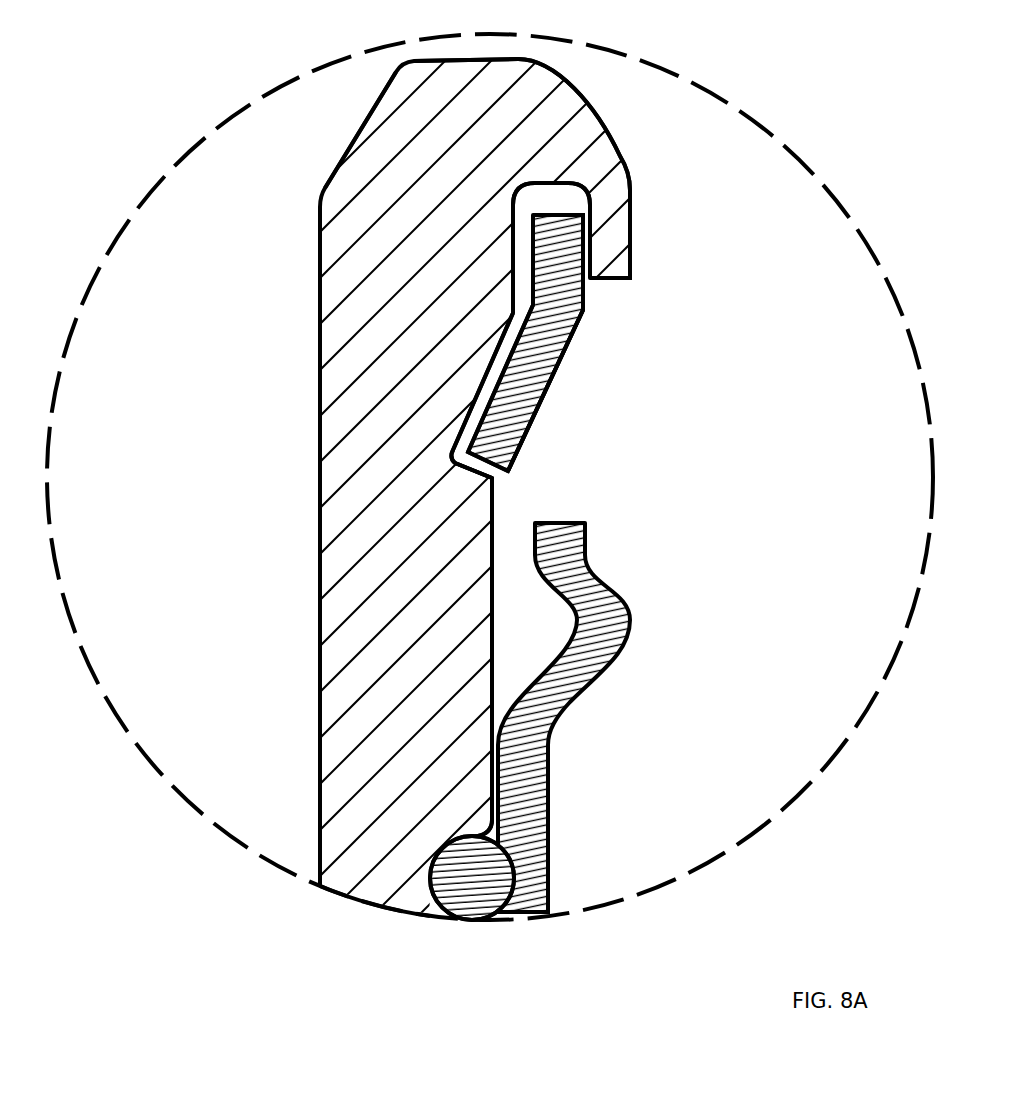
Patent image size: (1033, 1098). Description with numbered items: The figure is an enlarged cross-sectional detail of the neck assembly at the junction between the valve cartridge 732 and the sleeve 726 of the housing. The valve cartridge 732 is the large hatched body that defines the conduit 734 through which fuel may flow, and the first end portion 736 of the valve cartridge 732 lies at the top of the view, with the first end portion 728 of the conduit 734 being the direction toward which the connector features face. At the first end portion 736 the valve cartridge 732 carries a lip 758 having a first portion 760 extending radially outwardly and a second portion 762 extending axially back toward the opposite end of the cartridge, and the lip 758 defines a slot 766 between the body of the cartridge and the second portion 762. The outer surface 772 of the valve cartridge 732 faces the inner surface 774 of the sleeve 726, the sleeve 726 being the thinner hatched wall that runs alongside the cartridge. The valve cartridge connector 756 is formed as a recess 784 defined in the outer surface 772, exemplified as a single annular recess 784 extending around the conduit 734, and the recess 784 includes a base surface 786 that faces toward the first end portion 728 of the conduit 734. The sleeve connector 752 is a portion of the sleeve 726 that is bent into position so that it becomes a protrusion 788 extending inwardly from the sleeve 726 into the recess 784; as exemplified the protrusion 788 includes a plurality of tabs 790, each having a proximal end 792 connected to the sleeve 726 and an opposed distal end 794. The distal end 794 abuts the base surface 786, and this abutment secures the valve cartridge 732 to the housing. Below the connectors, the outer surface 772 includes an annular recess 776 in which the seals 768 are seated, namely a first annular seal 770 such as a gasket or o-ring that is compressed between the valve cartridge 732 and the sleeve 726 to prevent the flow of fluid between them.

The sleeve 726 is at (540, 874).
The first end portion of the conduit 728 is at (580, 342).
The valve cartridge 732 is at (332, 435).
The conduit 734 is at (163, 484).
The first end portion of the valve cartridge 736 is at (341, 149).
The sleeve connector 752 is at (533, 390).
The valve cartridge connector 756 is at (456, 466).
The lip 758 is at (533, 89).
The first portion of the lip 760 is at (541, 130).
The second portion of the lip 762 is at (611, 190).
The slot 766 is at (561, 194).
The seals 768 is at (469, 922).
The first annular seal 770 is at (465, 893).
The outer surface of the valve cartridge 772 is at (494, 665).
The inner surface of the sleeve 774 is at (468, 773).
The annular recess 776 is at (478, 832).
The recess 784 is at (352, 438).
The base surface 786 is at (478, 474).
The protrusion 788 is at (586, 389).
The tabs 790 is at (511, 431).
The proximal end 792 is at (567, 300).
The distal end 794 is at (496, 481).